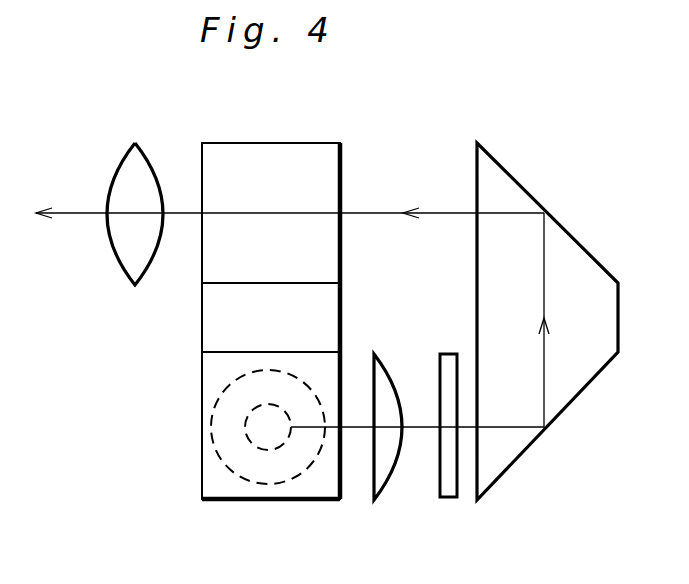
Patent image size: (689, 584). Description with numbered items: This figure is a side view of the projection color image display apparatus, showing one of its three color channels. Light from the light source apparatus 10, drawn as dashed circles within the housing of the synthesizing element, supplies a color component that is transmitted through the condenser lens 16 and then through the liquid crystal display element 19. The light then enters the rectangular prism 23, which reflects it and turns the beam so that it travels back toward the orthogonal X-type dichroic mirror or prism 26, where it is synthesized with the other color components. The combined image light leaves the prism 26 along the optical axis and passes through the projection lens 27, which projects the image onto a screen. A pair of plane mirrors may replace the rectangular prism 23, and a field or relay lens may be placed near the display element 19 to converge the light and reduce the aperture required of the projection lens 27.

The light source apparatus 10 is at (243, 482).
The condenser lens 16 is at (376, 478).
The liquid crystal display element 19 is at (446, 500).
The rectangular prism 23 is at (572, 364).
The orthogonal X-type dichroic mirror or prism 26 is at (263, 170).
The projection lens 27 is at (129, 245).